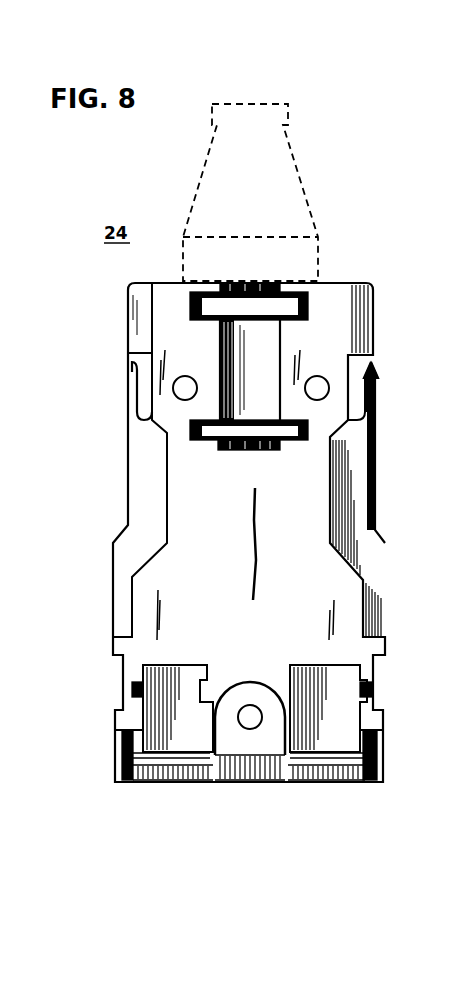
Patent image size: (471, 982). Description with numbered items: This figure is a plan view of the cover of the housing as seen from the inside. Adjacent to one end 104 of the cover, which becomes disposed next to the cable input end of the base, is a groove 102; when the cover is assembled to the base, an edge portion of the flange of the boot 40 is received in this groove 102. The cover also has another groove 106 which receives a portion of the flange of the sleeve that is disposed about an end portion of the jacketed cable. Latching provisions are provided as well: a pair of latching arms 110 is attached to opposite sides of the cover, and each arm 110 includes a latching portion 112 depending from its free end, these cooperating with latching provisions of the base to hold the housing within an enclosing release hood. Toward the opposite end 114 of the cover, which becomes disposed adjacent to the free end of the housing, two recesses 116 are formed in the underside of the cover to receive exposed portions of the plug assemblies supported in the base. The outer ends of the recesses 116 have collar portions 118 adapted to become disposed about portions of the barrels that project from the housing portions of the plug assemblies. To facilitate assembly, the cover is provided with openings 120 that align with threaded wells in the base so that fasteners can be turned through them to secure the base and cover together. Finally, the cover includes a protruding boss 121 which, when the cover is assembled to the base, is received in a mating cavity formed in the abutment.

The boot 40 is at (287, 172).
The groove 102 is at (192, 302).
The end 104 is at (330, 285).
The groove 106 is at (192, 432).
The latching arms 110 is at (373, 408).
The latching portion 112 is at (132, 365).
The end 114 is at (183, 783).
The recesses 116 is at (337, 723).
The collar portions 118 is at (323, 773).
The openings 120 is at (313, 387).
The protruding boss 121 is at (245, 770).